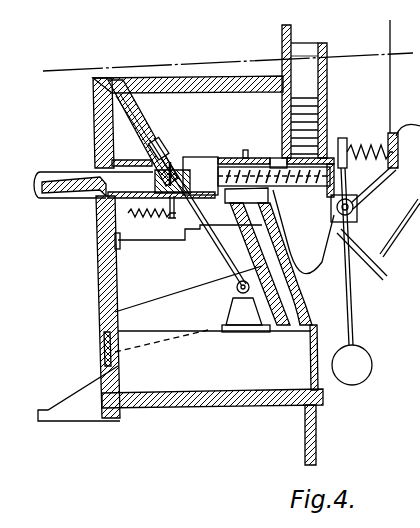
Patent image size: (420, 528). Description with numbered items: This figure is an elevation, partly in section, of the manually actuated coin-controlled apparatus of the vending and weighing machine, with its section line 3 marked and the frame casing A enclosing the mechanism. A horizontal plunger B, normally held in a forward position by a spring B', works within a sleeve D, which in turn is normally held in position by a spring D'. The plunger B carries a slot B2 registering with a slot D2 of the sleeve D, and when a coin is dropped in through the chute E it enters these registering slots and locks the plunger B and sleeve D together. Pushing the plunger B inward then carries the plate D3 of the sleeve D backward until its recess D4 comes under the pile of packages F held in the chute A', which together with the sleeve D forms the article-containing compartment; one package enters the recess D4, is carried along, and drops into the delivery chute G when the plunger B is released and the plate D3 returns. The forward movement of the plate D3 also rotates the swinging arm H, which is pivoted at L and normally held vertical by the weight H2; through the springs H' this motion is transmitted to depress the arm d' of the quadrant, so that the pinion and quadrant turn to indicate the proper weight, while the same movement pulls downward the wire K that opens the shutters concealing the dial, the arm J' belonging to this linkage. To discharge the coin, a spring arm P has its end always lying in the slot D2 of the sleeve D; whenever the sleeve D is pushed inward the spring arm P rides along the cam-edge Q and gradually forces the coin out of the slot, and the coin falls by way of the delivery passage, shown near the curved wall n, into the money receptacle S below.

The section line 3- 3 is at (226, 57).
The frame casing A is at (186, 244).
The chute A' is at (282, 53).
The wire K is at (390, 28).
The pile of packages F is at (316, 108).
The chute E is at (145, 101).
The spring arm P is at (214, 248).
The horizontal plunger B is at (93, 173).
The slot B2 is at (153, 177).
The spring B' is at (301, 204).
The sleeve D is at (200, 161).
The slot D2 is at (180, 158).
The plate D3 is at (245, 157).
The recess D4 is at (276, 158).
The spring D' is at (188, 222).
The cam-edge Q is at (268, 256).
The duct bowl n is at (296, 292).
The delivery chute G is at (188, 309).
The money receptacle S is at (214, 323).
The swinging arm H is at (345, 229).
The weight H2 is at (372, 365).
The springs H' is at (372, 141).
The pivot L is at (354, 208).
The arm of the quadrant d' is at (378, 239).
The arm J' is at (408, 142).